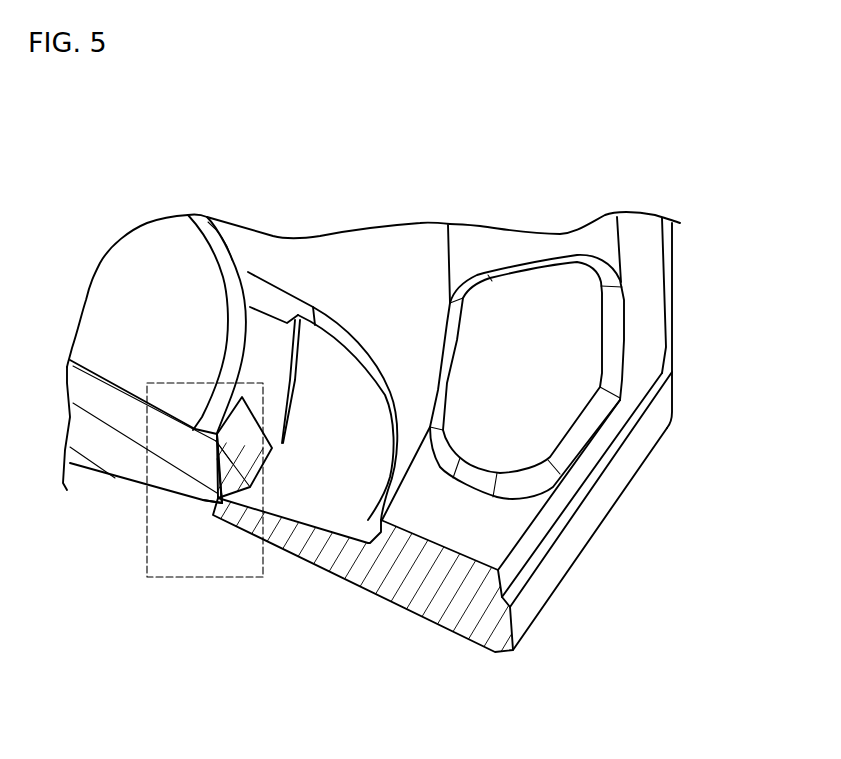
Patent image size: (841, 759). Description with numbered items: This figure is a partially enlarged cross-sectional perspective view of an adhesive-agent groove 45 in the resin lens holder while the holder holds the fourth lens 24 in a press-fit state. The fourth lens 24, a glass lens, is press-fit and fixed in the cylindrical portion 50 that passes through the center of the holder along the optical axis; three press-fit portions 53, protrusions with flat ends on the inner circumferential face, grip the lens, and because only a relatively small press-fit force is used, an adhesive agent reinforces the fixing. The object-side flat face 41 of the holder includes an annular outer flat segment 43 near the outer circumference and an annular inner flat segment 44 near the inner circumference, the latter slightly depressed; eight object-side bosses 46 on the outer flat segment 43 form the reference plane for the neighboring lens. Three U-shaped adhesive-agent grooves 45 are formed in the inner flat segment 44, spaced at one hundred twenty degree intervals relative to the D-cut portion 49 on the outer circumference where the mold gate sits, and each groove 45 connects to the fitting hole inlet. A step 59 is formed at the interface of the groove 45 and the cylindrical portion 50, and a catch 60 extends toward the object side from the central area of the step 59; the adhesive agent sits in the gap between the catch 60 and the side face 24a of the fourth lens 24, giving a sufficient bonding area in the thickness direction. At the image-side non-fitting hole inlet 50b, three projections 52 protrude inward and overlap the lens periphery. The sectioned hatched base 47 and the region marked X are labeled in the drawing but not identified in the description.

The fourth lens 24 is at (120, 347).
The side face of the fourth lens 24a is at (248, 470).
The object-side flat face 41 is at (470, 130).
The outer flat segment 43 is at (498, 253).
The inner flat segment 44 is at (357, 258).
The adhesive-agent groove 45 is at (317, 490).
The object-side boss 46 is at (575, 305).
The base section 47 is at (418, 613).
The D-cut portion 49 is at (637, 443).
The cylindrical portion 50 is at (167, 557).
The non-fitting hole inlet 50b is at (208, 498).
The projection 52 is at (208, 502).
The press-fit portion 53 is at (202, 212).
The step 59 is at (258, 383).
The catch 60 is at (242, 397).
The section region indicator X is at (140, 507).